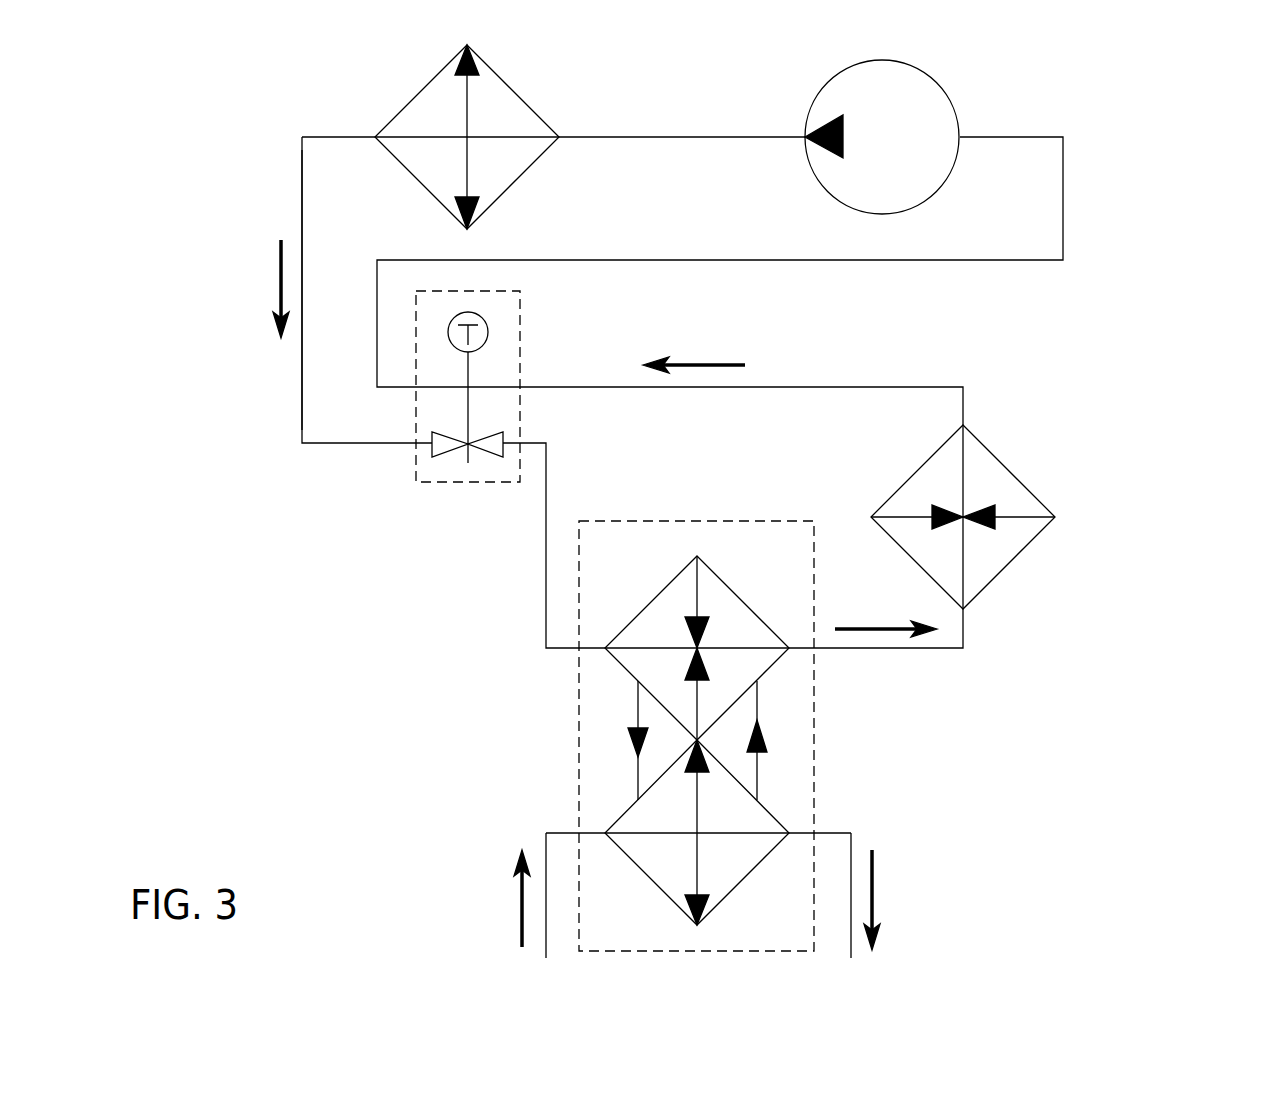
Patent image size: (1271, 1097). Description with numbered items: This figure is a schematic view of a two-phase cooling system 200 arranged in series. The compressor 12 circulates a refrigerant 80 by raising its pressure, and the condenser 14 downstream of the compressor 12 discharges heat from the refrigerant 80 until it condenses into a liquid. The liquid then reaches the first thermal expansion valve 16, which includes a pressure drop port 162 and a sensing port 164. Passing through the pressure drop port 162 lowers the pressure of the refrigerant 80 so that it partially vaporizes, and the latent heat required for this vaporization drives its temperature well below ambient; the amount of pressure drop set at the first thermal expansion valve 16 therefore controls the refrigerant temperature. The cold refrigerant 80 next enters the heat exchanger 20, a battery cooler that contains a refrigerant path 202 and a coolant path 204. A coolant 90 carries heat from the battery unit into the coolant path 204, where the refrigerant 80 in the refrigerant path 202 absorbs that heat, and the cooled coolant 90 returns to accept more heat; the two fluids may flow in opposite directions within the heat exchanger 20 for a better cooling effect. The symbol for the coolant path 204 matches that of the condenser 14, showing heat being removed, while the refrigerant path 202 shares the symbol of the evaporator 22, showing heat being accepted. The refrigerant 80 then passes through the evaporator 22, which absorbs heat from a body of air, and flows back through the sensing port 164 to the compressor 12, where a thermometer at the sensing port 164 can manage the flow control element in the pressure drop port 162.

The two-phase cooling system 200 is at (1107, 330).
The compressor 12 is at (945, 93).
The condenser 14 is at (527, 98).
The first thermal expansion valve 16 is at (338, 530).
The heat exchanger 20 is at (888, 760).
The evaporator 22 is at (1013, 560).
The refrigerant 80 is at (271, 285).
The coolant 90 is at (757, 690).
The pressure drop port 162 is at (482, 457).
The sensing port 164 is at (496, 361).
The refrigerant path 202 is at (742, 598).
The coolant path 204 is at (748, 878).